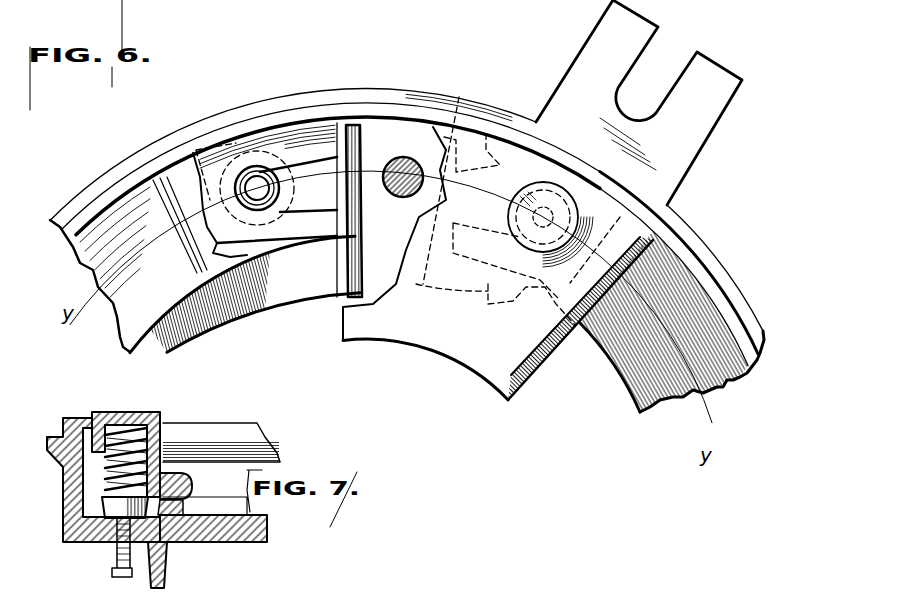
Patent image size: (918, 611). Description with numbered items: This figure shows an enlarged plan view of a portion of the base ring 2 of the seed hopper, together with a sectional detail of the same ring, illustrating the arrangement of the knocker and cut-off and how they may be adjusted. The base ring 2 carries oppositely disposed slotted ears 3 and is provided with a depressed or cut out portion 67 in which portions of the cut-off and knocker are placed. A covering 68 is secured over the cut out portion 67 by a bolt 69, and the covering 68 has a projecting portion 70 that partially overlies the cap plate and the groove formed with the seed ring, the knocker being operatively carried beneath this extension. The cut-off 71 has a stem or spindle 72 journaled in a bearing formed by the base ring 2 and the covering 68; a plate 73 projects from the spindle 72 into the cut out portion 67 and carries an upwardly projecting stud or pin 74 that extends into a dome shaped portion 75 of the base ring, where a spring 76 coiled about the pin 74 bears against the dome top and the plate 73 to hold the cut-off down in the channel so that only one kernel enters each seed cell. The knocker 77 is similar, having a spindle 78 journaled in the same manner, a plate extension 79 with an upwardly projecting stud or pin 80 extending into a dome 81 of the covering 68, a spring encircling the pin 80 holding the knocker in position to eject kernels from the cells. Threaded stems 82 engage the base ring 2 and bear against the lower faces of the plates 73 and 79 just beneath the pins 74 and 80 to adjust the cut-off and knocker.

In FIG. 6, the base ring 2 is at (407, 250).
In FIG. 6, the slotted ears 3 is at (639, 102).
In FIG. 6, the cut out portion 67 is at (436, 175).
In FIG. 7, the cut out portion 67 is at (80, 545).
In FIG. 6, the covering 68 is at (653, 243).
In FIG. 7, the covering 68 is at (190, 483).
In FIG. 6, the bolt 69 is at (412, 160).
In FIG. 6, the projecting portion 70 is at (483, 362).
In FIG. 6, the cut-off 71 is at (245, 294).
In FIG. 6, the stem or spindle 72 is at (337, 228).
In FIG. 6, the plate 73 is at (282, 184).
In FIG. 7, the plate 73 is at (107, 503).
In FIG. 6, the stud or pin 74 is at (257, 186).
In FIG. 7, the stud or pin 74 is at (63, 480).
In FIG. 7, the dome shaped portion 75 is at (158, 417).
In FIG. 6, the spring 76 is at (203, 238).
In FIG. 7, the spring 76 is at (136, 412).
In FIG. 6, the knocker 77 is at (489, 285).
In FIG. 6, the spindle 78 is at (377, 223).
In FIG. 6, the plate extension 79 is at (508, 192).
In FIG. 6, the stud or pin 80 is at (545, 217).
In FIG. 6, the dome 81 is at (545, 217).
In FIG. 7, the threaded stems 82 is at (112, 571).